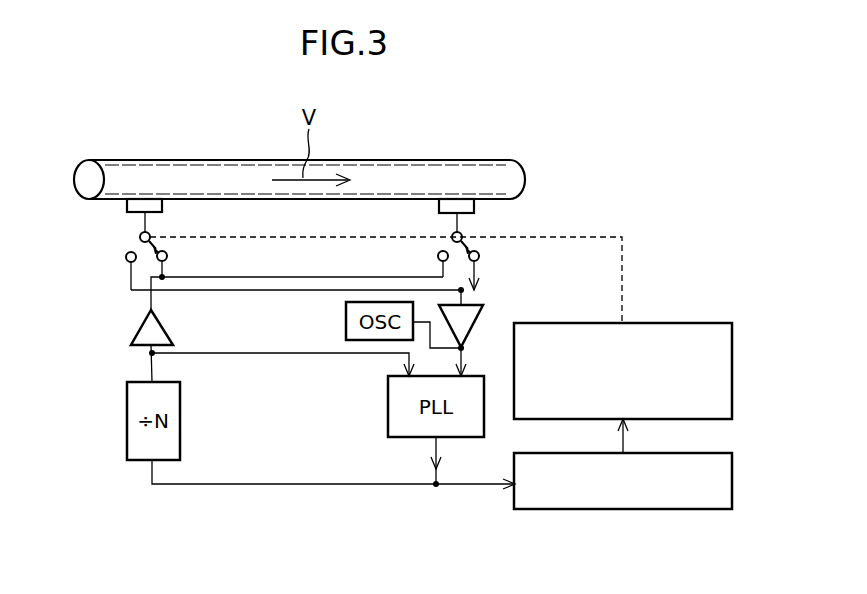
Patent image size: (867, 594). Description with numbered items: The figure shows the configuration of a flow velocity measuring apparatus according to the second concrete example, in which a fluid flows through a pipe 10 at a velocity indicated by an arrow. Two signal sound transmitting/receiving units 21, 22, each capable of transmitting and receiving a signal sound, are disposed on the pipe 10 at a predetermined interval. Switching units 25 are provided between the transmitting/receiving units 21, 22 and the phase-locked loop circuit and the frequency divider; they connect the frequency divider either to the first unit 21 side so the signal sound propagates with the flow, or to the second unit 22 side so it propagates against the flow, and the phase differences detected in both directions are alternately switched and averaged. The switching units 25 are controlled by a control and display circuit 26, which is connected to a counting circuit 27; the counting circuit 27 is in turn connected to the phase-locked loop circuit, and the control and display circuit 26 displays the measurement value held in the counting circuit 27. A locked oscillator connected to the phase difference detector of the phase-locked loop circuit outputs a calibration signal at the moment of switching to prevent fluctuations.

The pipe (fluid conduit) 10 is at (450, 162).
The first signal sound transmitting/receiving unit 21 is at (127, 206).
The second signal sound transmitting/receiving unit 22 is at (476, 205).
The switching units 25 is at (131, 244).
The control and display circuit 26 is at (688, 323).
The counting circuit 27 is at (702, 510).